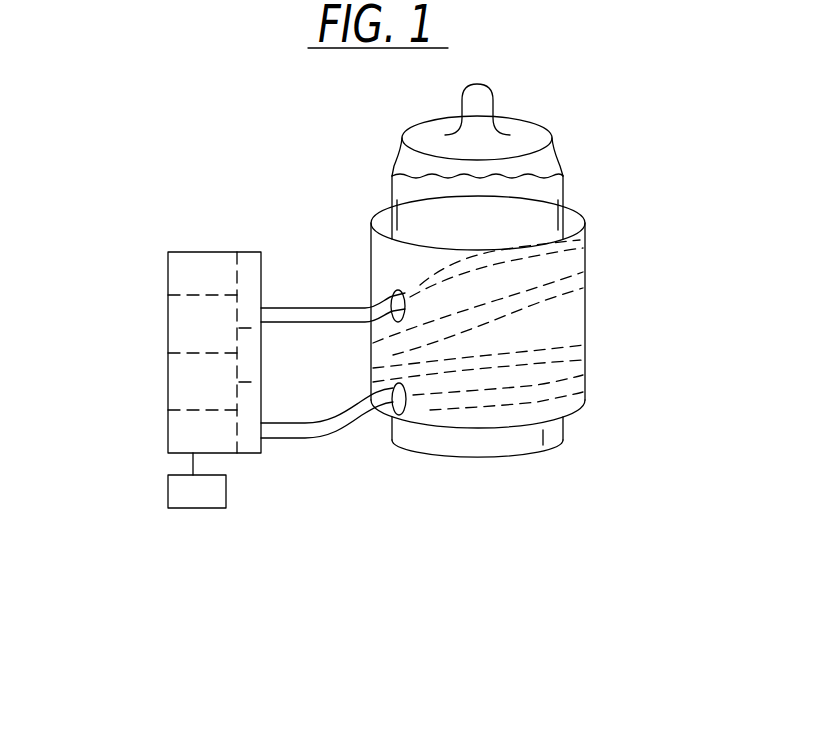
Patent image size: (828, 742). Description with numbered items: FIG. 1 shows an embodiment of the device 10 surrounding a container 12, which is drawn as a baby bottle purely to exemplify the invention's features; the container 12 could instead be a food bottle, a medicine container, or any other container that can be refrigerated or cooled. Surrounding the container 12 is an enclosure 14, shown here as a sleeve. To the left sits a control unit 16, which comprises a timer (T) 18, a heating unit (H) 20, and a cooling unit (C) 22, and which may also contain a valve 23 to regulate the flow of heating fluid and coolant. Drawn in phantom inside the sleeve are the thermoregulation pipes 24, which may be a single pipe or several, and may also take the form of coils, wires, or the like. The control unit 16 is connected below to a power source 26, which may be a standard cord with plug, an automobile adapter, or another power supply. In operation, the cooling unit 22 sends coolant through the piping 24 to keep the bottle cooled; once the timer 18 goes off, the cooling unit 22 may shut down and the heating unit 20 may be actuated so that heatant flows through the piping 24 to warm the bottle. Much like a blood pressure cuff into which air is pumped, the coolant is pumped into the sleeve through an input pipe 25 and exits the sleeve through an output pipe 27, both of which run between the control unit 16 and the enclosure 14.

The device 10 is at (653, 99).
The container 12 is at (527, 117).
The enclosure 14 is at (585, 220).
The control unit 16 is at (207, 216).
The timer 18 is at (168, 270).
The heating unit 20 is at (168, 330).
The cooling unit 22 is at (168, 387).
The valve 23 is at (250, 362).
The thermoregulation pipes 24 is at (548, 305).
The input pipe 25 is at (310, 438).
The power source 26 is at (168, 490).
The output pipe 27 is at (288, 305).